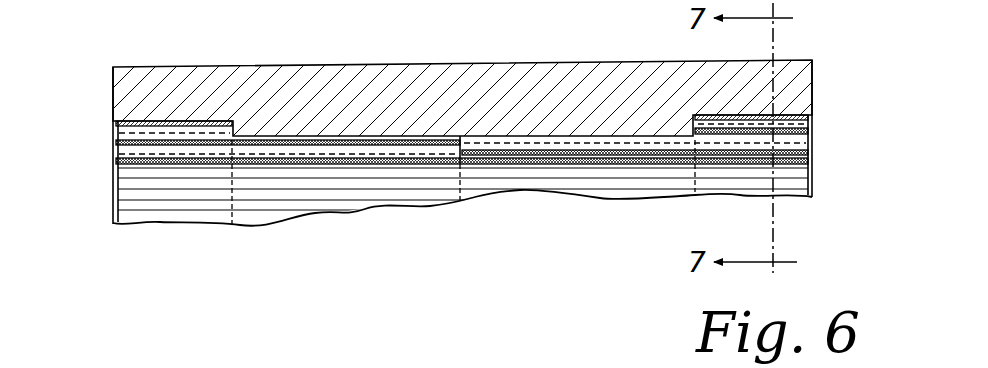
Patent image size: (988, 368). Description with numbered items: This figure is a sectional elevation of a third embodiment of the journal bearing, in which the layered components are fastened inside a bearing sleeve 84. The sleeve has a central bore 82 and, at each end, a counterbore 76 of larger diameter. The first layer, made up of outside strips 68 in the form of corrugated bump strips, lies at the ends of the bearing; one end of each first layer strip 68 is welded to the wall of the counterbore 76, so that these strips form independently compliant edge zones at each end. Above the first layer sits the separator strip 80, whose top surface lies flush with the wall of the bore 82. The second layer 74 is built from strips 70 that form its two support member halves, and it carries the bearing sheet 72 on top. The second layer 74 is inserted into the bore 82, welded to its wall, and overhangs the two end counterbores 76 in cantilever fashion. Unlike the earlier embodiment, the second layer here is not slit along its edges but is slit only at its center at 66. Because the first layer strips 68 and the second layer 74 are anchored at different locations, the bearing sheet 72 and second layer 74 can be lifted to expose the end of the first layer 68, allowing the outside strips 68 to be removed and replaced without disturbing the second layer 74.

The center slit 66 is at (447, 148).
The first layer corrugated bump strip 68 is at (111, 134).
The second layer strips 70 is at (302, 150).
The bearing sheet 72 is at (648, 160).
The second layer 74 is at (111, 154).
The counterbore 76 is at (173, 133).
The separator strip 80 is at (170, 143).
The bore 82 is at (549, 143).
The bearing sleeve 84 is at (396, 67).